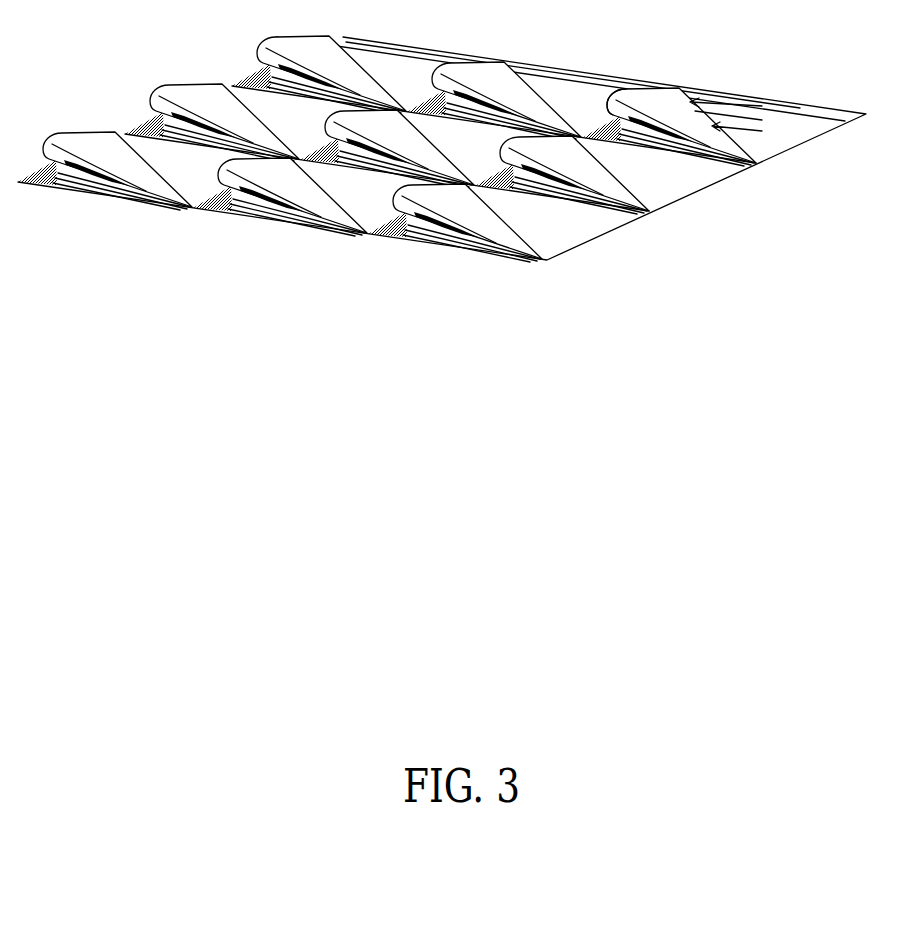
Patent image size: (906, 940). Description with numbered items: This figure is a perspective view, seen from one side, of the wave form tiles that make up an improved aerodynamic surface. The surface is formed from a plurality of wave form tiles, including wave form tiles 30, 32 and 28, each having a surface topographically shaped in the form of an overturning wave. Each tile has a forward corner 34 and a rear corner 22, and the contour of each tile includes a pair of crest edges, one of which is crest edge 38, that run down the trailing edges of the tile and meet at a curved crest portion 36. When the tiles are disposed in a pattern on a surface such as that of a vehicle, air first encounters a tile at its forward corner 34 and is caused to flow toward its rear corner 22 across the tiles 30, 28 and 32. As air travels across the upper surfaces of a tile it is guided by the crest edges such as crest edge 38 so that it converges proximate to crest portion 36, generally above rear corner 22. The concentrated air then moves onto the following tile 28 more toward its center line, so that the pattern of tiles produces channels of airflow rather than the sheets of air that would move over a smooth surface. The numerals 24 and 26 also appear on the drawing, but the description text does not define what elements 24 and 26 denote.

The rear corner 22 is at (618, 115).
The plate surface 24 is at (700, 198).
The scoop element 26 is at (588, 122).
The wave form tile 28 is at (421, 139).
The wave form tile 30 is at (494, 92).
The wave form tile 32 is at (636, 158).
The forward corner 34 is at (756, 117).
The crest portion 36 is at (609, 98).
The crest edge 38 is at (682, 169).